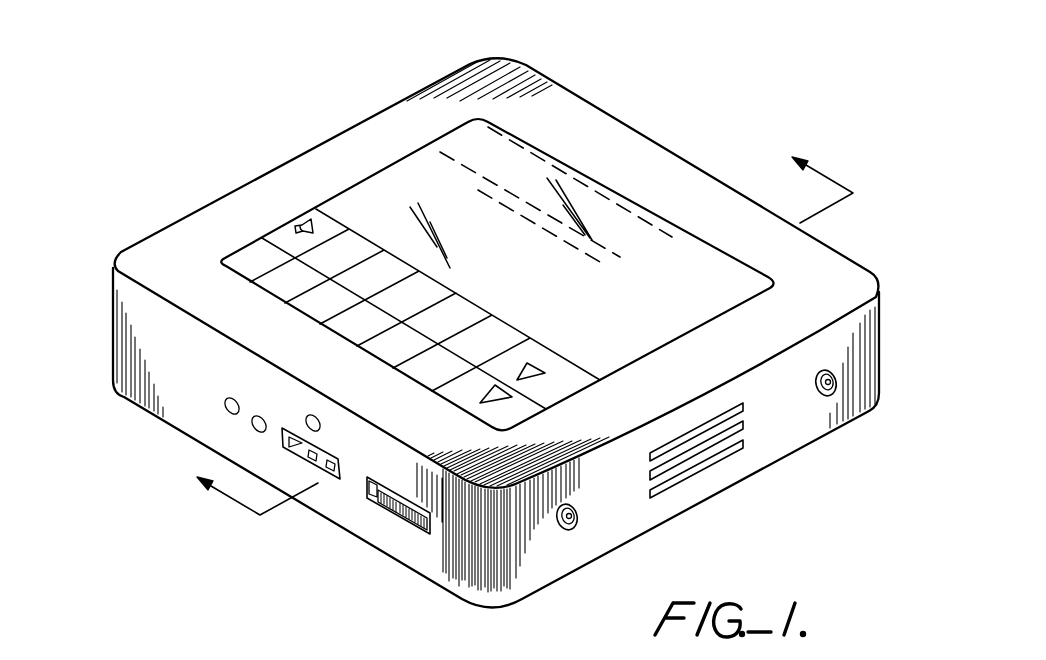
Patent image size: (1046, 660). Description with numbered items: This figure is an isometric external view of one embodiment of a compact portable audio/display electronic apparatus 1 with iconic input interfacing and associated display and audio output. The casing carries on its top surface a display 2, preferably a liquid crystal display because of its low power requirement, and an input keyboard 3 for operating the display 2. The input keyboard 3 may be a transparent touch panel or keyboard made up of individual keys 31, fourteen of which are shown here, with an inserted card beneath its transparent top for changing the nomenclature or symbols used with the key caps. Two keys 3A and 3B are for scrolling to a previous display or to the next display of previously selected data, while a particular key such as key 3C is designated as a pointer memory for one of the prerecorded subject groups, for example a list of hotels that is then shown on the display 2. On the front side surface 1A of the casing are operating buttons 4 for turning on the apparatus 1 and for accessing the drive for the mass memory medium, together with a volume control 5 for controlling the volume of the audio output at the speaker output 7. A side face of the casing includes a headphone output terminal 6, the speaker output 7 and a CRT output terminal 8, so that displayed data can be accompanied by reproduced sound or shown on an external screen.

The compact portable audio/display electronic apparatus 1 is at (334, 102).
The front side surface 1A is at (612, 128).
The display 2 is at (533, 148).
The input keyboard 3 is at (243, 253).
The keys 31 is at (343, 343).
The key for scrolling 3A is at (533, 357).
The key for scrolling 3B is at (467, 398).
The key designated as pointer memory 3C is at (286, 233).
The operating buttons 4 is at (330, 480).
The volume control 5 is at (396, 514).
The headphone output terminal 6 is at (570, 531).
The speaker output 7 is at (713, 423).
The CRT output terminal 8 is at (826, 397).